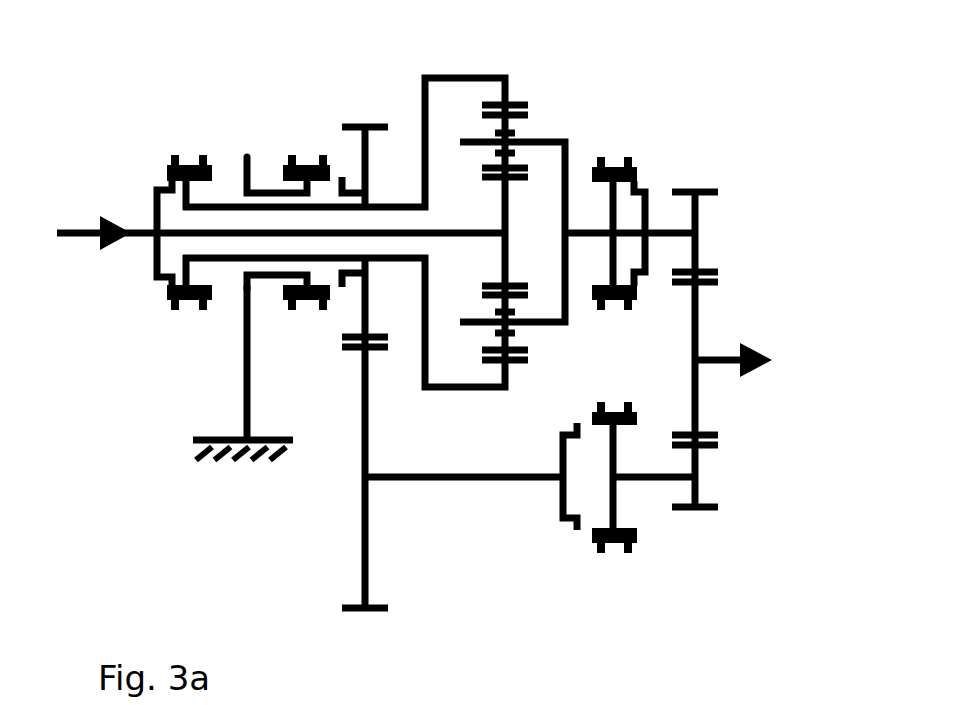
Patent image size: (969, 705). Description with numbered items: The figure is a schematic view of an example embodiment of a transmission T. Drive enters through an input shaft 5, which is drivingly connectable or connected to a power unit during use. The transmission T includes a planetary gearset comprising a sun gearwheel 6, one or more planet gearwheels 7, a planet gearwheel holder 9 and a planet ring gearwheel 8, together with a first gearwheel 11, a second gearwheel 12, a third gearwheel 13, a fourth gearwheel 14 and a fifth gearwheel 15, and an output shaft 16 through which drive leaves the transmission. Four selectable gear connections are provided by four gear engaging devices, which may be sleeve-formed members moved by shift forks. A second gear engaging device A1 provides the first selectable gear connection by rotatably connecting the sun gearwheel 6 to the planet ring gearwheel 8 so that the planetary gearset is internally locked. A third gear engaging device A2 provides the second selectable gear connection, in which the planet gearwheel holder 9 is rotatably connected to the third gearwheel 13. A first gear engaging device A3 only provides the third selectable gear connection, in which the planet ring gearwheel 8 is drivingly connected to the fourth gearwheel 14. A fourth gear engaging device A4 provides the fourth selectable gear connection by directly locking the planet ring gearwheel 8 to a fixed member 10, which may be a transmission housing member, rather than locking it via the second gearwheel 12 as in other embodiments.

The transmission T is at (657, 92).
The input shaft 5 is at (132, 228).
The second gear engaging device A1 is at (193, 163).
The fourth gear engaging device A4 is at (307, 167).
The fixed member 10 is at (193, 440).
The first gearwheel 11 is at (363, 127).
The second gearwheel 12 is at (362, 530).
The planet ring gearwheel 8 is at (498, 75).
The sun gearwheel 6 is at (500, 215).
The planet gearwheel holder 9 is at (545, 137).
The planet gearwheel 7 is at (508, 343).
The third gear engaging device A2 is at (610, 165).
The third gearwheel 13 is at (698, 230).
The fifth gearwheel 15 is at (698, 327).
The output shaft 16 is at (717, 365).
The fourth gearwheel 14 is at (697, 490).
The first gear engaging device A3 is at (617, 543).